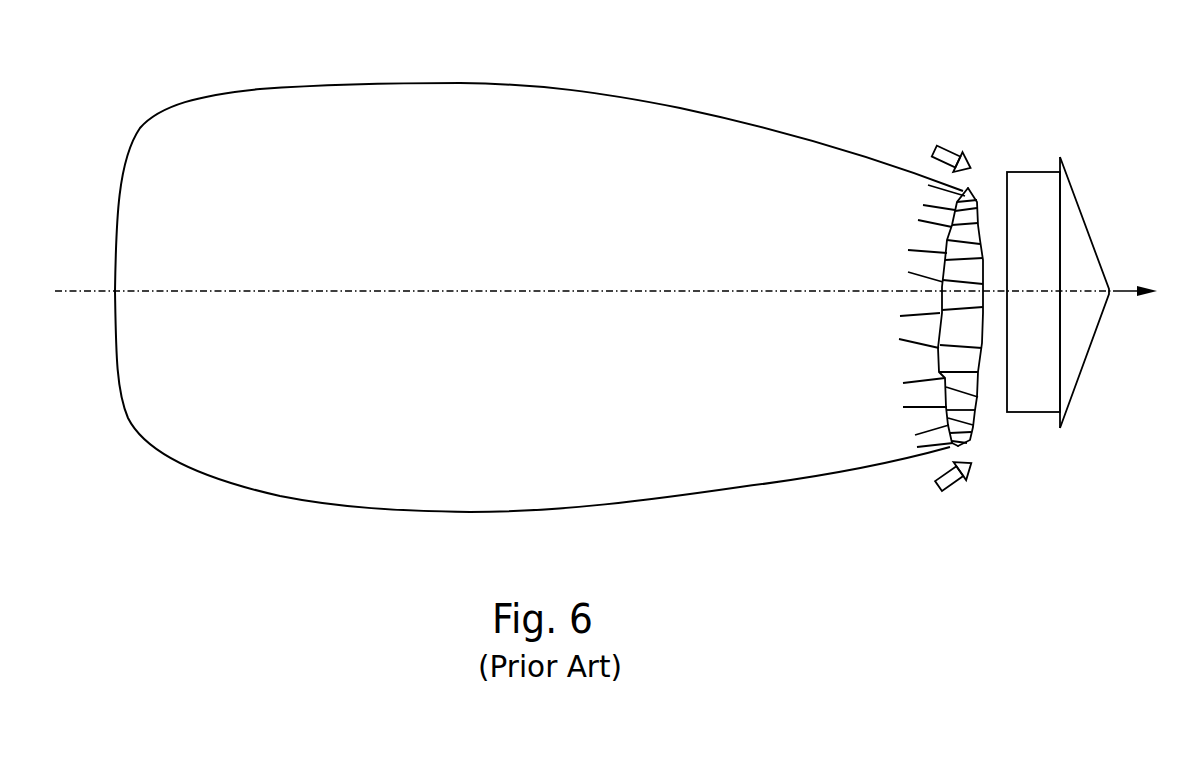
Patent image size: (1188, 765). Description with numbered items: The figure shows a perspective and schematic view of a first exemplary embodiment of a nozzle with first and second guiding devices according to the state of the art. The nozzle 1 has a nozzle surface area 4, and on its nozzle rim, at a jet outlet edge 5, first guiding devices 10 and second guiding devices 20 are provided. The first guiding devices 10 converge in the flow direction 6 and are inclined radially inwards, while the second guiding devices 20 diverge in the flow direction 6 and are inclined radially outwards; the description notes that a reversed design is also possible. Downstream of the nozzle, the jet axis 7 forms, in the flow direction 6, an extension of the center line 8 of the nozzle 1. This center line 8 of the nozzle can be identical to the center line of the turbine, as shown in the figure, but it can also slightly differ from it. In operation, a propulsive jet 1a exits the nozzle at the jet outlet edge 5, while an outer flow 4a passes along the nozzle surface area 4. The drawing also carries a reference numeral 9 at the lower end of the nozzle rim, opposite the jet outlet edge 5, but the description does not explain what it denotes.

The nozzle 1 is at (660, 80).
The propulsive jet 1a is at (1033, 172).
The nozzle surface area 4 is at (893, 196).
The outer flow 4a is at (947, 146).
The jet outlet edge 5 is at (972, 183).
The flow direction 6 is at (1135, 281).
The jet axis 7 is at (1010, 291).
The center line 8 is at (413, 291).
The propeller tip 9 is at (963, 454).
The first guiding devices 10 is at (917, 235).
The second guiding devices 20 is at (917, 262).